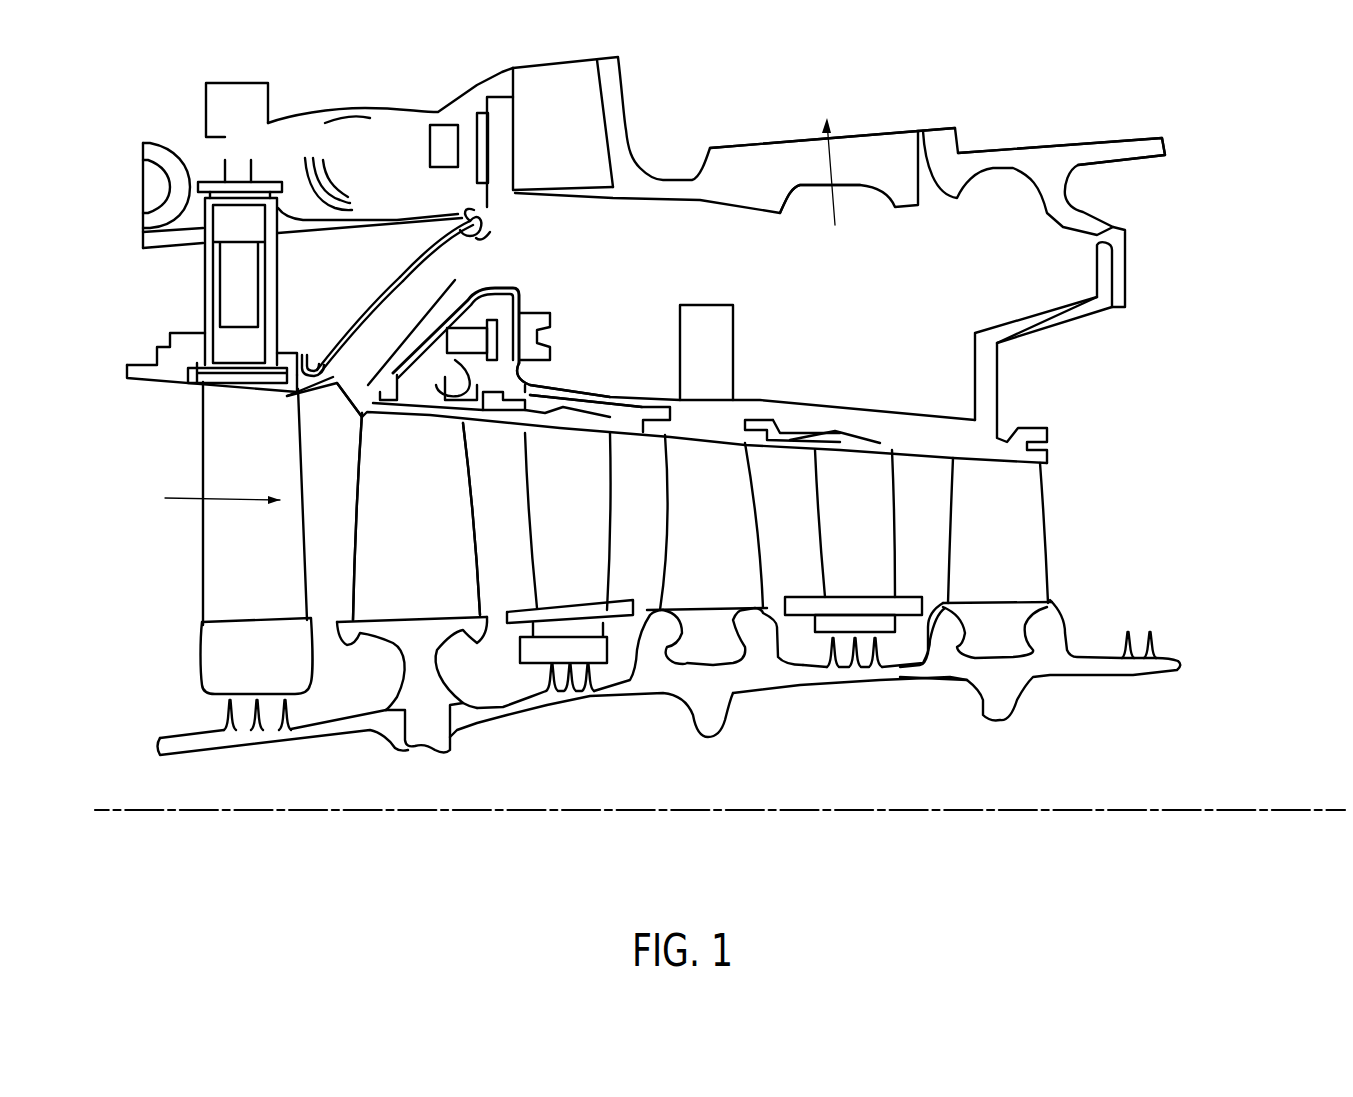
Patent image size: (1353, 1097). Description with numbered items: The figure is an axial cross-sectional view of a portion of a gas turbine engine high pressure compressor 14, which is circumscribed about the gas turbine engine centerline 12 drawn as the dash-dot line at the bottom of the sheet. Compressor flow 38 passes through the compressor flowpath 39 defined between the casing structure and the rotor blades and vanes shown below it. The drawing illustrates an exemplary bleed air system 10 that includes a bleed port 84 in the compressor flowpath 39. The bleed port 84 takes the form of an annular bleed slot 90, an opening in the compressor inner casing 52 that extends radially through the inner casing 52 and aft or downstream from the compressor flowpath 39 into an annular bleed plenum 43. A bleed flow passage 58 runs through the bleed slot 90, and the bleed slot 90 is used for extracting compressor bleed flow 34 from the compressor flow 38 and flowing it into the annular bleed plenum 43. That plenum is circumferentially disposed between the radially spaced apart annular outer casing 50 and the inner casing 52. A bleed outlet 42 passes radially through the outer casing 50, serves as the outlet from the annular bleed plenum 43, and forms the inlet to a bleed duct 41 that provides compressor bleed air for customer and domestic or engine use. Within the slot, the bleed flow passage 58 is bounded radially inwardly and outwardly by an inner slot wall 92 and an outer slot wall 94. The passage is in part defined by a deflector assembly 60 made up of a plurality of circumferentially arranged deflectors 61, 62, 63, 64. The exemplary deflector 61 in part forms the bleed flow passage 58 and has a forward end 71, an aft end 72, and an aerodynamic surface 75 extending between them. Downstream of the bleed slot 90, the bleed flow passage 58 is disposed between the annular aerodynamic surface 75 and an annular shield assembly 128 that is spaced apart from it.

The bleed air system 10 is at (437, 225).
The gas turbine engine centerline 12 is at (1120, 811).
The high pressure compressor 14 is at (373, 850).
The compressor bleed flow 34 is at (372, 357).
The compressor flow 38 is at (165, 498).
The compressor flowpath 39 is at (164, 481).
The bleed duct 41 is at (722, 148).
The bleed outlet 42 is at (817, 207).
The annular bleed plenum 43 is at (856, 315).
The outer casing 50 is at (993, 150).
The inner casing 52 is at (570, 385).
The bleed flow passage 58 is at (400, 276).
The deflector assembly 60 is at (423, 250).
The deflector 61 is at (243, 155).
The deflector 62 is at (275, 155).
The deflector 63 is at (337, 163).
The deflector 64 is at (354, 166).
The forward end 71 is at (313, 362).
The aft end 72 is at (478, 238).
The aerodynamic surface 75 is at (442, 257).
The bleed port 84 is at (350, 390).
The bleed slot 90 is at (352, 380).
The inner slot wall 92 is at (385, 378).
The outer slot wall 94 is at (353, 357).
The shield assembly 128 is at (423, 357).